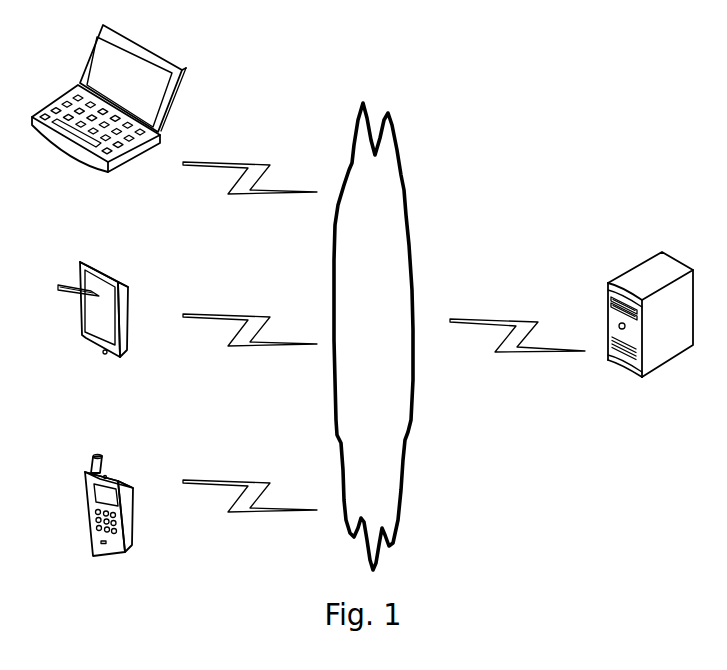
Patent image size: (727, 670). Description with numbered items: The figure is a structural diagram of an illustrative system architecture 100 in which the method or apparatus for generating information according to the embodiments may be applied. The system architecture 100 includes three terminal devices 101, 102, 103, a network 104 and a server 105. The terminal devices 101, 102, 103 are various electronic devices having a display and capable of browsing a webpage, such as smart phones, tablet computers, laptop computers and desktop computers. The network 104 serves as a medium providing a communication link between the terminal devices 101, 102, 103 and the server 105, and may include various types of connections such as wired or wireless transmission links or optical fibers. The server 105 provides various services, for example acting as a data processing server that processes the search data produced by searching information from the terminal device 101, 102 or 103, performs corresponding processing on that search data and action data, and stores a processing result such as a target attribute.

The system architecture 100 is at (607, 18).
The terminal device 101 is at (109, 521).
The terminal device 102 is at (93, 328).
The terminal device 103 is at (109, 117).
The network 104 is at (373, 336).
The server 105 is at (650, 332).